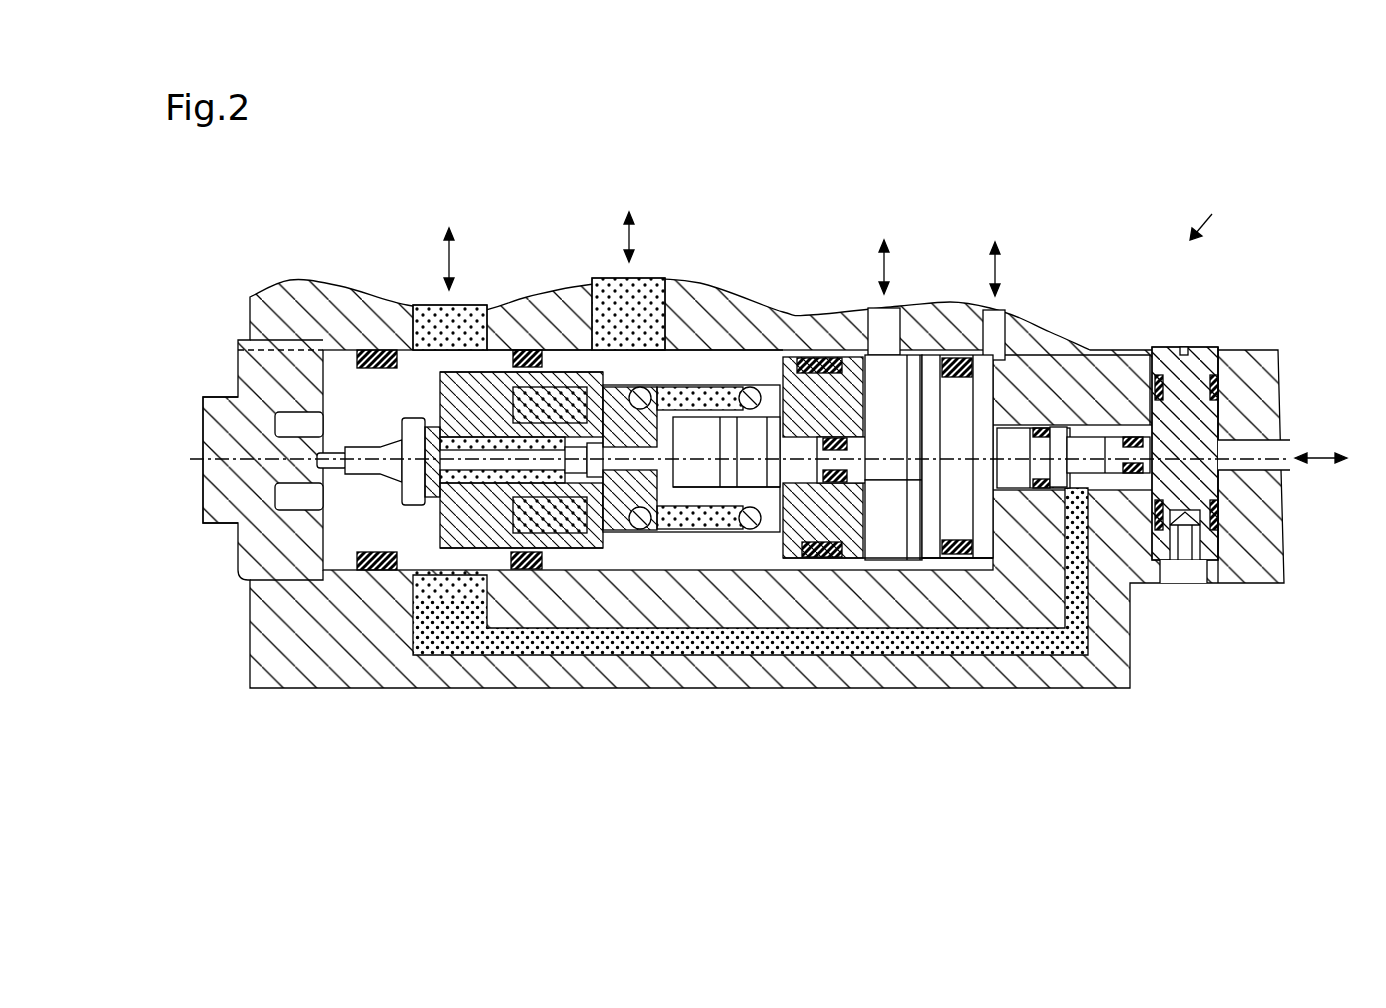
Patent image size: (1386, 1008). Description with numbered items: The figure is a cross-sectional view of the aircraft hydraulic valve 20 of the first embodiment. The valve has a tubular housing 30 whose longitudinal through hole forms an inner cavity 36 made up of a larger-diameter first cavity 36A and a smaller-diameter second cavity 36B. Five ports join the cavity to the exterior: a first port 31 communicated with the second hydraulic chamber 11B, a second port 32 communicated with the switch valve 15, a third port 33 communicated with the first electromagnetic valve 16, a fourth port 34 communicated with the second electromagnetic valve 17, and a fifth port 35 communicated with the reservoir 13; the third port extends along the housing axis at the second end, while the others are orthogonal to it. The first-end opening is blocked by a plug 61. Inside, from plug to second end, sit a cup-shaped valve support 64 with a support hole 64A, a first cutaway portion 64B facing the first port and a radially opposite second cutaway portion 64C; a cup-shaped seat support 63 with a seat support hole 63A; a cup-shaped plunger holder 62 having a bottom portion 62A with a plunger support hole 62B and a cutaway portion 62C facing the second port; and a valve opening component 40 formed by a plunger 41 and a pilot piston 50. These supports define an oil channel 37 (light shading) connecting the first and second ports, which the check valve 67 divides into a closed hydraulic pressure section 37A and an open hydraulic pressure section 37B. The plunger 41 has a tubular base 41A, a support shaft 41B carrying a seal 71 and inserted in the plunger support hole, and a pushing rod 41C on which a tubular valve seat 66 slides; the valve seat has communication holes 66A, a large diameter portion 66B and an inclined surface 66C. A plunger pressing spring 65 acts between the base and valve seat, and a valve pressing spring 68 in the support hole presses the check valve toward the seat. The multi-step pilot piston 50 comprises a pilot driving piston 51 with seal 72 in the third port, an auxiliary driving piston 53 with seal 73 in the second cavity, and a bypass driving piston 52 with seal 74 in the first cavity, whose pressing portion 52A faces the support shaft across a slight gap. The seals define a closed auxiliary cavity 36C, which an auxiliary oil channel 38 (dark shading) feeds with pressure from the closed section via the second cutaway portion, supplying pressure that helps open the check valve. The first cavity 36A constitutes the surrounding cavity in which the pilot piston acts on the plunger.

The second hydraulic chamber 11B is at (449, 244).
The reservoir 13 is at (884, 252).
The switch valve 15 is at (630, 222).
The first electromagnetic valve 16 is at (1321, 443).
The second electromagnetic valve 17 is at (995, 254).
The hydraulic valve 20 is at (1215, 212).
The housing 30 is at (282, 692).
The first port 31 is at (422, 304).
The second port 32 is at (655, 288).
The third port 33 is at (1250, 472).
The fourth port 34 is at (992, 322).
The fifth port 35 is at (888, 312).
The inner cavity 36 is at (757, 557).
The first cavity 36A is at (880, 562).
The second cavity 36B is at (1038, 425).
The auxiliary cavity 36C is at (1085, 515).
The oil channel 37 is at (310, 330).
The closed hydraulic pressure section 37A is at (345, 550).
The open hydraulic pressure section 37B is at (548, 340).
The auxiliary oil channel 38 is at (540, 656).
The valve opening component 40 is at (711, 375).
The plunger 41 is at (445, 508).
The tubular base 41A is at (670, 535).
The support shaft 41B is at (790, 483).
The pushing rod 41C is at (462, 370).
The pilot piston 50 is at (981, 576).
The pilot driving piston 51 is at (1195, 445).
The bypass driving piston 52 is at (995, 550).
The pressing portion 52A is at (896, 500).
The auxiliary driving piston 53 is at (1070, 430).
The plug 61 is at (200, 432).
The plunger holder 62 is at (775, 357).
The bottom portion 62A is at (848, 358).
The plunger support hole 62B is at (870, 430).
The cutaway portion 62C is at (607, 345).
The seat support 63 is at (546, 348).
The seat support hole 63A is at (515, 550).
The valve support 64 is at (326, 297).
The support hole 64A is at (398, 487).
The first cutaway portion 64B is at (482, 330).
The second cutaway portion 64C is at (430, 650).
The plunger pressing spring 65 is at (660, 490).
The valve seat 66 is at (603, 523).
The communication holes 66A is at (512, 415).
The large diameter portion 66B is at (392, 368).
The inclined surface 66C is at (330, 405).
The check valve 67 is at (380, 550).
The valve pressing spring 68 is at (375, 440).
The seal 71 is at (843, 437).
The seal 72 is at (1127, 475).
The seal 73 is at (1020, 490).
The seal 74 is at (953, 556).